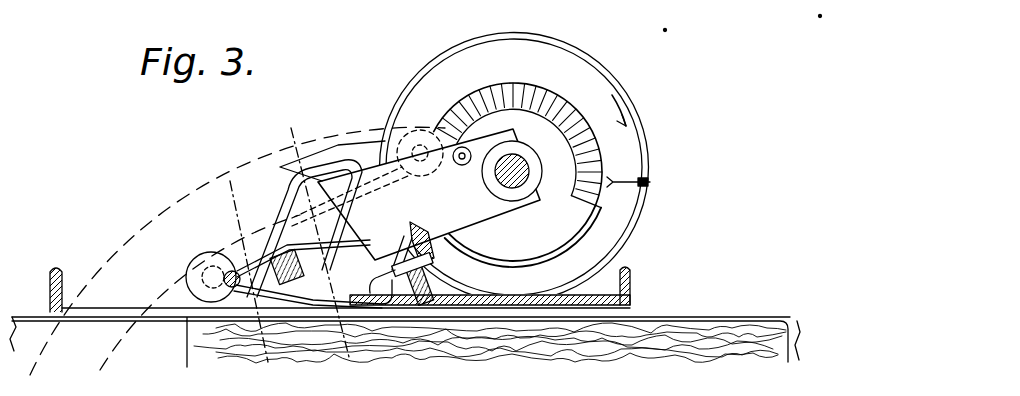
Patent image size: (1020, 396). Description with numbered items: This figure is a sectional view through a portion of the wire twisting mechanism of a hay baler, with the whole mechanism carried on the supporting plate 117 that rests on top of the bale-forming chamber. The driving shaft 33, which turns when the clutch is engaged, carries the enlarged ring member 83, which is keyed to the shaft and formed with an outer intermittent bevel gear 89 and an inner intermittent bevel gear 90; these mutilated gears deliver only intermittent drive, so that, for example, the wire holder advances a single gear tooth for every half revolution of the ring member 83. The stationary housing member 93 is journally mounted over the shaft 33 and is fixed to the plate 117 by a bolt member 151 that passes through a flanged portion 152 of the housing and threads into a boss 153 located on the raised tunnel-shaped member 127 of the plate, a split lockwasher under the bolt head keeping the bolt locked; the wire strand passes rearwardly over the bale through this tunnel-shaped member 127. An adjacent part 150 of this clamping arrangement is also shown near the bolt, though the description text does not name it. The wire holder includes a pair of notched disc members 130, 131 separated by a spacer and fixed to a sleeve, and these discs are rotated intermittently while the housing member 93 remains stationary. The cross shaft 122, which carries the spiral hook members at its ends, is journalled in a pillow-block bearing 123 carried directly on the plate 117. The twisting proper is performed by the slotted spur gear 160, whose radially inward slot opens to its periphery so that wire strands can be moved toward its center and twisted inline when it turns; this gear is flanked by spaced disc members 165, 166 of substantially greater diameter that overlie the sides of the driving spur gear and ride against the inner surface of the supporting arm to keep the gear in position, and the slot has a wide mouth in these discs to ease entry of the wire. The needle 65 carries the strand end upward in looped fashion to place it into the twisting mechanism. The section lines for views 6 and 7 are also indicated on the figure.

The ring member 83 is at (637, 87).
The inner intermittent bevel gear 90 is at (543, 100).
The outer intermittent bevel gear 89 is at (630, 178).
The shaft 33 is at (528, 185).
The housing member 93 is at (526, 224).
The disc member 130 is at (292, 173).
The disc member 131 is at (338, 170).
The bolt member 151 is at (403, 252).
The clamp bracket 150 is at (430, 258).
The flanged portion 152 is at (436, 272).
The boss 153 is at (428, 278).
The bearing 123 is at (210, 255).
The cross shaft 122 is at (205, 277).
The disc member 165 is at (300, 303).
The disc member 166 is at (316, 306).
The slotted spur gear 160 is at (284, 275).
The tunnel-shaped member 127 is at (614, 303).
The top stationary portion 117 is at (96, 302).
The needle 65 is at (163, 213).
The section line 6- 6 is at (246, 182).
The section line 7- 7 is at (296, 129).